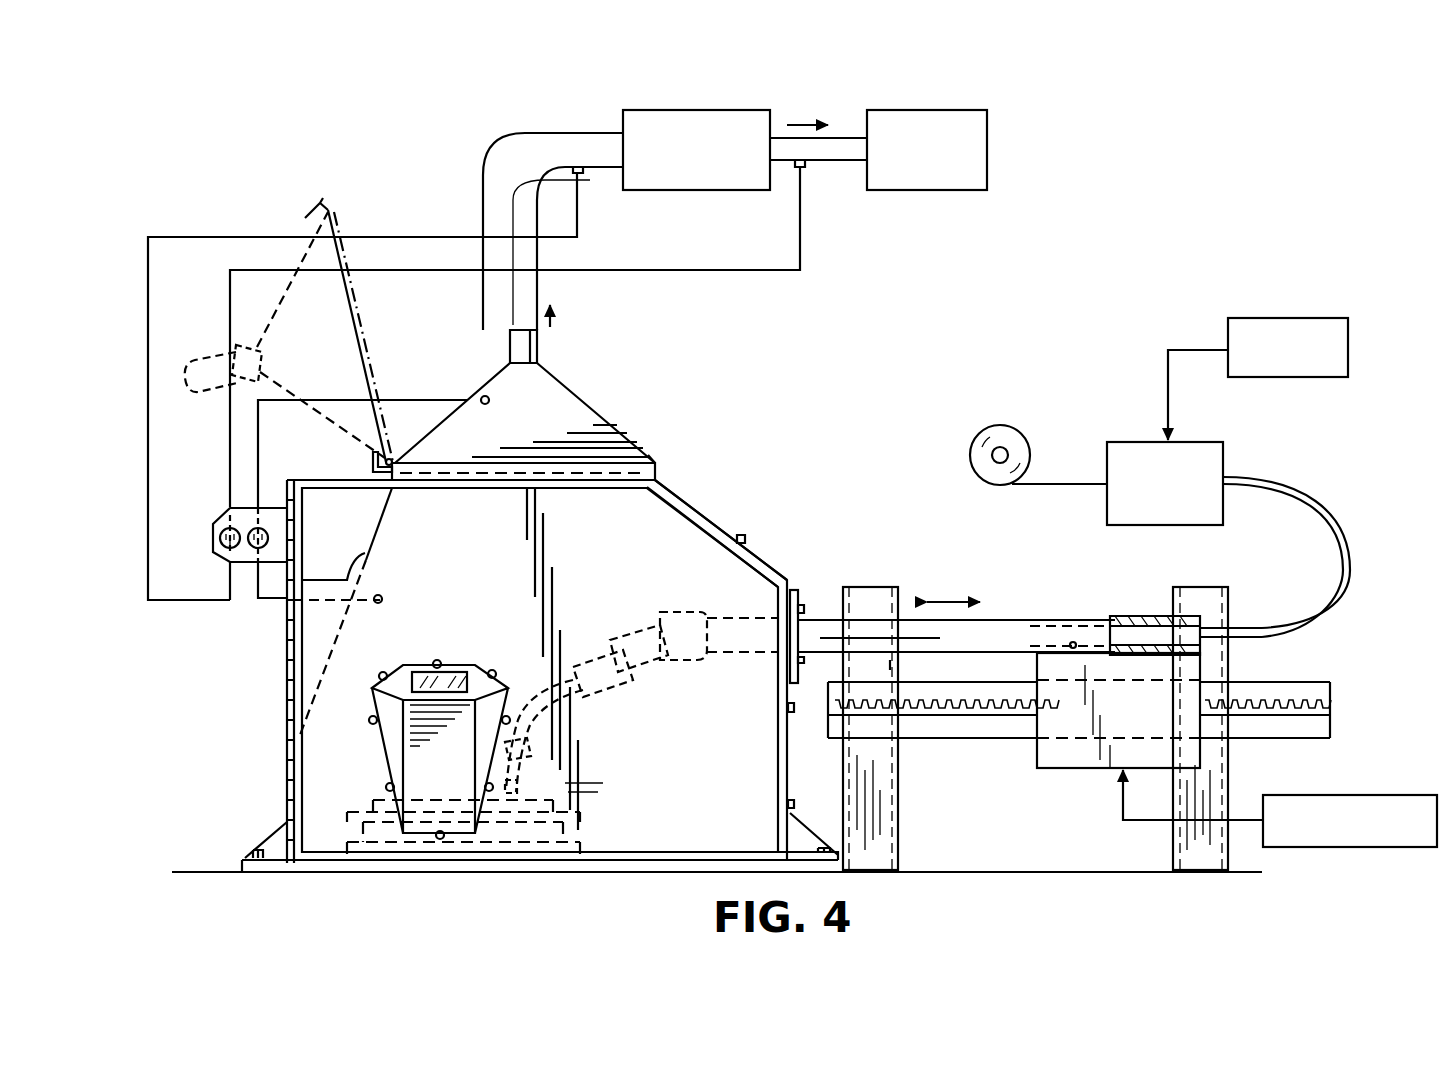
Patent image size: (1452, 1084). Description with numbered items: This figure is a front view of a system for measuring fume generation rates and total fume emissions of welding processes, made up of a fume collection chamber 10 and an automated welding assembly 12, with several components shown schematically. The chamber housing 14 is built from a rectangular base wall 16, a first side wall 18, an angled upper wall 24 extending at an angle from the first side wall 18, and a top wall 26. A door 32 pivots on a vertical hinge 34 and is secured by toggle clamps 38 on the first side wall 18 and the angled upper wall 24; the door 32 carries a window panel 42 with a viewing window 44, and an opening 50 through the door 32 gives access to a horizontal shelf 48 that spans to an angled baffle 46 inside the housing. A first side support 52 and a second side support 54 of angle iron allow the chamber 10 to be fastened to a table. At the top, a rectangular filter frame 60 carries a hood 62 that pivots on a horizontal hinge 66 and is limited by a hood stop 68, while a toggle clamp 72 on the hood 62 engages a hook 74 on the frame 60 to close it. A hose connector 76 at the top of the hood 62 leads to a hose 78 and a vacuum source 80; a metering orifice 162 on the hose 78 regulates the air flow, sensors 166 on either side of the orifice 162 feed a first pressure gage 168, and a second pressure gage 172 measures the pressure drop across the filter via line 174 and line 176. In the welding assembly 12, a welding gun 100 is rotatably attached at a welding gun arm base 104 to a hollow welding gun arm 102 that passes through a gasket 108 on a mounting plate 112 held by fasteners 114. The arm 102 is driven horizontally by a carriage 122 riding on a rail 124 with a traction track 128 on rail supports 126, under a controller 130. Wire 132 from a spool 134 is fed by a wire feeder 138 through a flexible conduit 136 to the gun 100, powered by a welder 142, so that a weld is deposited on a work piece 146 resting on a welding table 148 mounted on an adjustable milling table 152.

The fume collection chamber 10 is at (692, 390).
The automated welding assembly 12 is at (917, 537).
The chamber housing 14 is at (688, 497).
The rectangular base wall 16 is at (675, 867).
The first side wall 18 is at (822, 776).
The angled upper wall 24 is at (712, 522).
The top wall 26 is at (333, 490).
The door 32 is at (630, 827).
The vertical hinge 34 is at (287, 722).
The toggle clamps 38 is at (742, 537).
The window panel 42 is at (430, 770).
The viewing window 44 is at (448, 680).
The angled baffle 46 is at (337, 643).
The horizontal shelf 48 is at (365, 553).
The opening 50 is at (350, 525).
The first side support 52 is at (835, 850).
The second side support 54 is at (268, 842).
The rectangular filter frame 60 is at (577, 470).
The hood 62 is at (560, 385).
The horizontal hinge 66 is at (378, 462).
The hood stop 68 is at (385, 458).
The toggle clamp 72 is at (305, 218).
The hook 74 is at (653, 465).
The hose connector 76 is at (510, 345).
The hose 78 is at (483, 160).
The vacuum source 80 is at (987, 153).
The welding gun 100 is at (548, 742).
The welding gun arm 102 is at (990, 622).
The welding gun arm base 104 is at (665, 608).
The gasket 108 is at (812, 577).
The mounting plate 112 is at (792, 590).
The fasteners 114 is at (890, 665).
The carriage 122 is at (1060, 760).
The rail 124 is at (1315, 692).
The rail supports 126 is at (882, 593).
The traction track 128 is at (1270, 695).
The controller 130 is at (1365, 795).
The wire 132 is at (1065, 482).
The spool 134 is at (998, 430).
The flexible conduit 136 is at (1283, 485).
The wire feeder 138 is at (1202, 447).
The welder 142 is at (1298, 323).
The work piece 146 is at (580, 778).
The welding table 148 is at (570, 820).
The milling table 152 is at (543, 847).
The metering orifice 162 is at (702, 190).
The sensors 166 is at (580, 173).
The first pressure gage 168 is at (220, 532).
The second pressure gage 172 is at (253, 548).
The line 174 is at (418, 400).
The line 176 is at (267, 602).